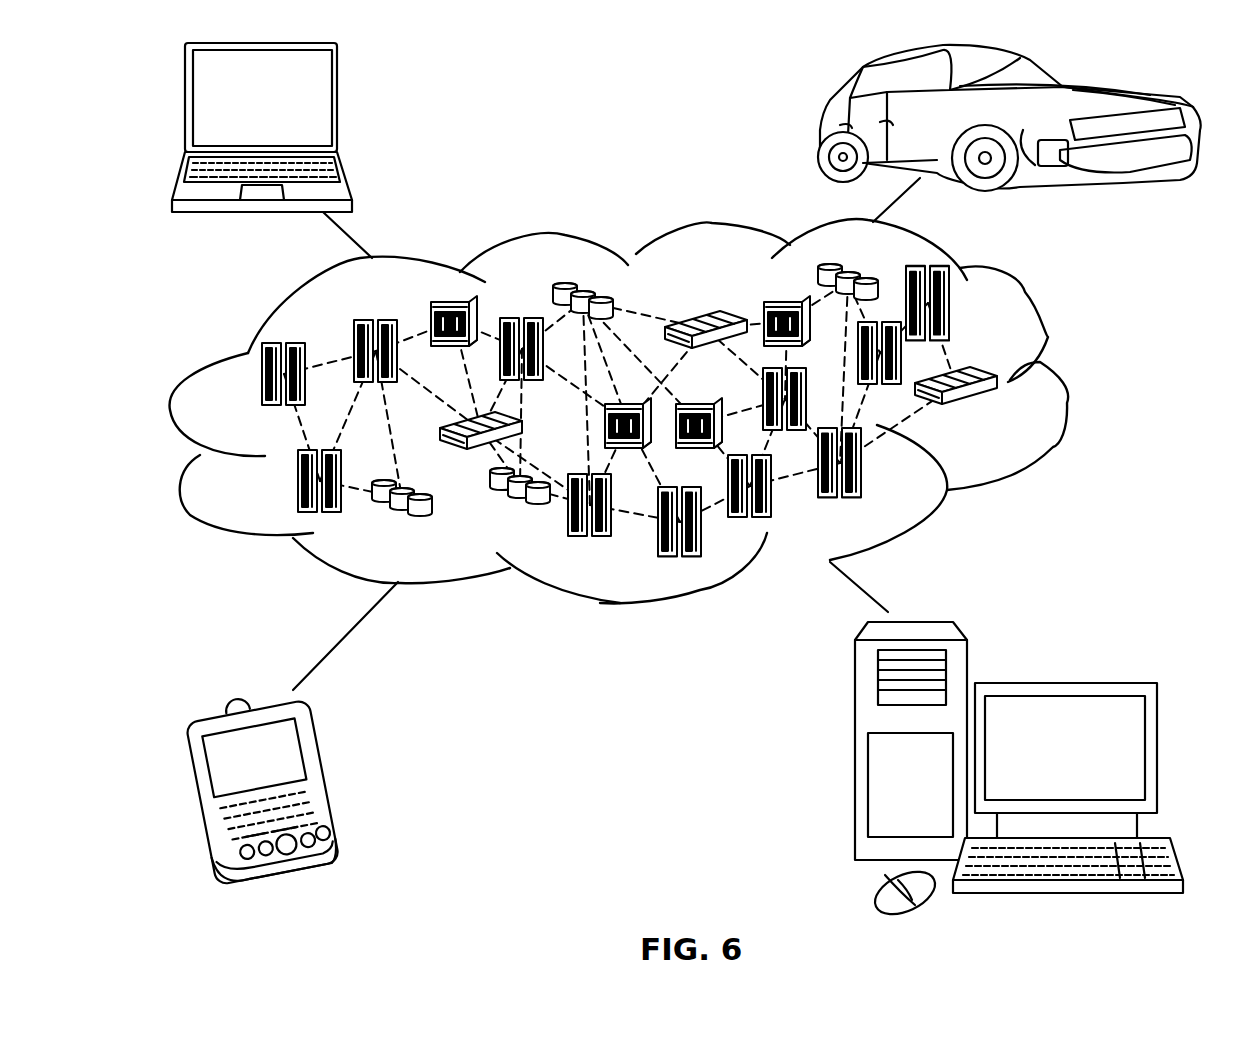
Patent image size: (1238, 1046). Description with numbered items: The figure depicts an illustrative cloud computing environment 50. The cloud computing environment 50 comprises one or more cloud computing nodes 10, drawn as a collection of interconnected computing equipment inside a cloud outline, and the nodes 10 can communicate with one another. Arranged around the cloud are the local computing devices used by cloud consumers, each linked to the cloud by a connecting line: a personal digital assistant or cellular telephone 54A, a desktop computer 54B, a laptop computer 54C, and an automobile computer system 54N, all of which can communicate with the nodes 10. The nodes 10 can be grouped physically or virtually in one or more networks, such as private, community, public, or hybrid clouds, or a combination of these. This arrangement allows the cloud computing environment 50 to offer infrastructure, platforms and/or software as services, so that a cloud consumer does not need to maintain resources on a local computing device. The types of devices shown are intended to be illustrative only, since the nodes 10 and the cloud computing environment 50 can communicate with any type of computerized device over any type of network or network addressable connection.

The cloud computing node 10 is at (1008, 422).
The cloud computing environment 50 is at (1066, 386).
The personal digital assistant or cellular telephone 54A is at (330, 786).
The desktop computer 54B is at (1067, 683).
The laptop computer 54C is at (338, 108).
The automobile computer system 54N is at (822, 119).